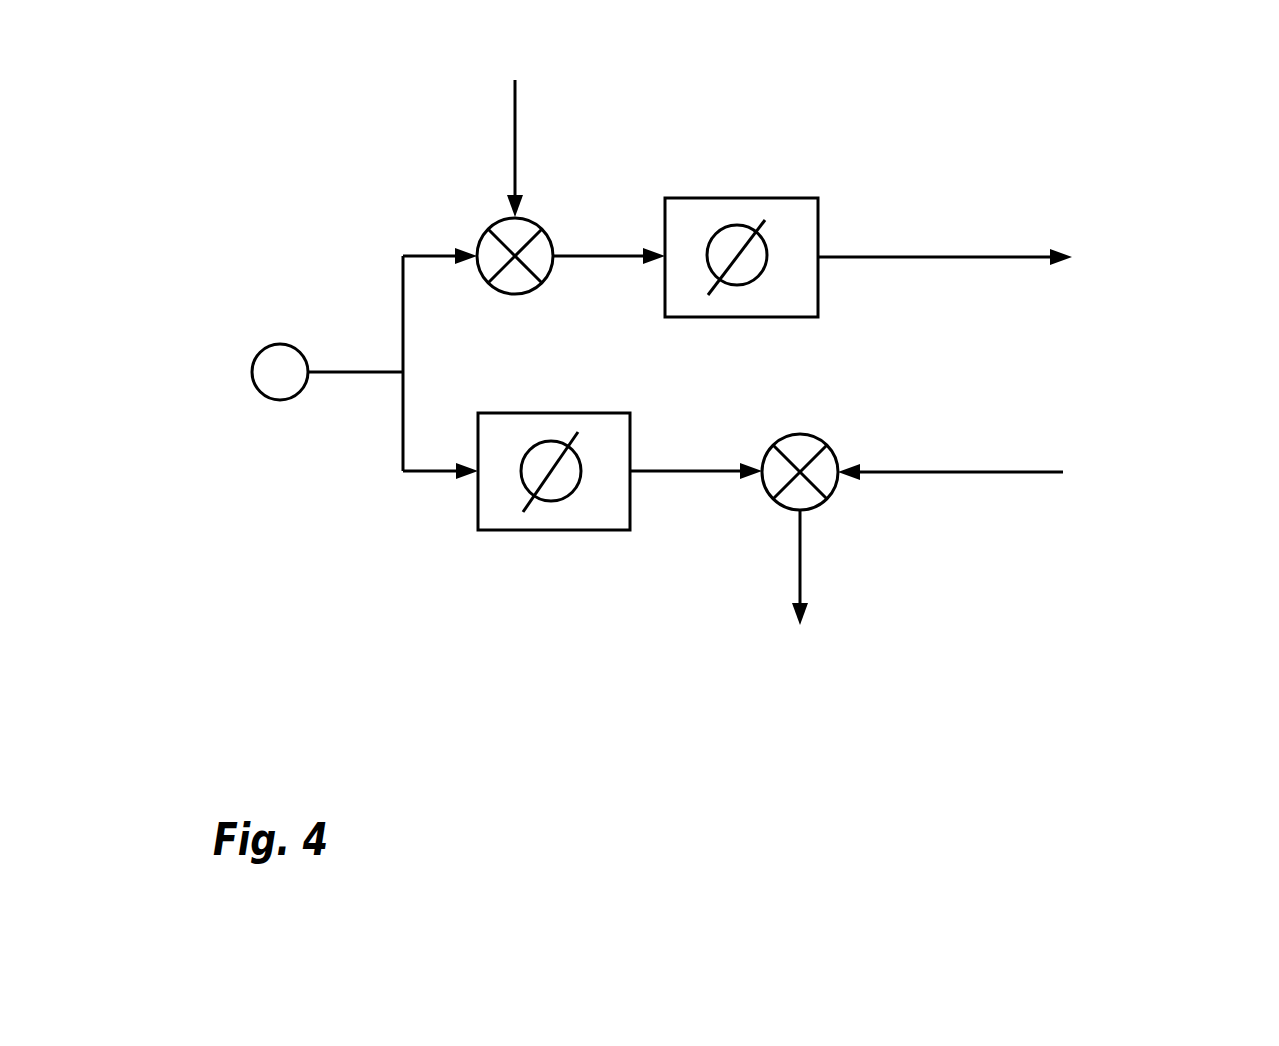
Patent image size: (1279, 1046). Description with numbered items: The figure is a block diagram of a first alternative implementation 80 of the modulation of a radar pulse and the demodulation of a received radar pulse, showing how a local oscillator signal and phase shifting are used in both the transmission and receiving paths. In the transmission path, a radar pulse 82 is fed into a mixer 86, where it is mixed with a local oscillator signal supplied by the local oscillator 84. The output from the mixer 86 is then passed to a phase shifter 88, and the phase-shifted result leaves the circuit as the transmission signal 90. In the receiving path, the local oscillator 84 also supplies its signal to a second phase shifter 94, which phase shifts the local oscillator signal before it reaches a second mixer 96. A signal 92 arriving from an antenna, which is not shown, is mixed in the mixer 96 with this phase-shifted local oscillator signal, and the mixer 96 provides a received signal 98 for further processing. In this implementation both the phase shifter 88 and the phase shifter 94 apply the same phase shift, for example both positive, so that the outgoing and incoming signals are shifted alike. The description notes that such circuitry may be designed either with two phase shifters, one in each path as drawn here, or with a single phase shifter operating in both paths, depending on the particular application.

The first alternative implementation 80 is at (1149, 686).
The radar pulse 82 is at (541, 132).
The local oscillator 84 is at (275, 312).
The mixer 86 is at (431, 174).
The phase shifter 88 is at (869, 185).
The transmission signal 90 is at (1000, 257).
The signal 92 is at (950, 442).
The phase shifter 94 is at (660, 568).
The mixer 96 is at (890, 547).
The received signal 98 is at (803, 598).